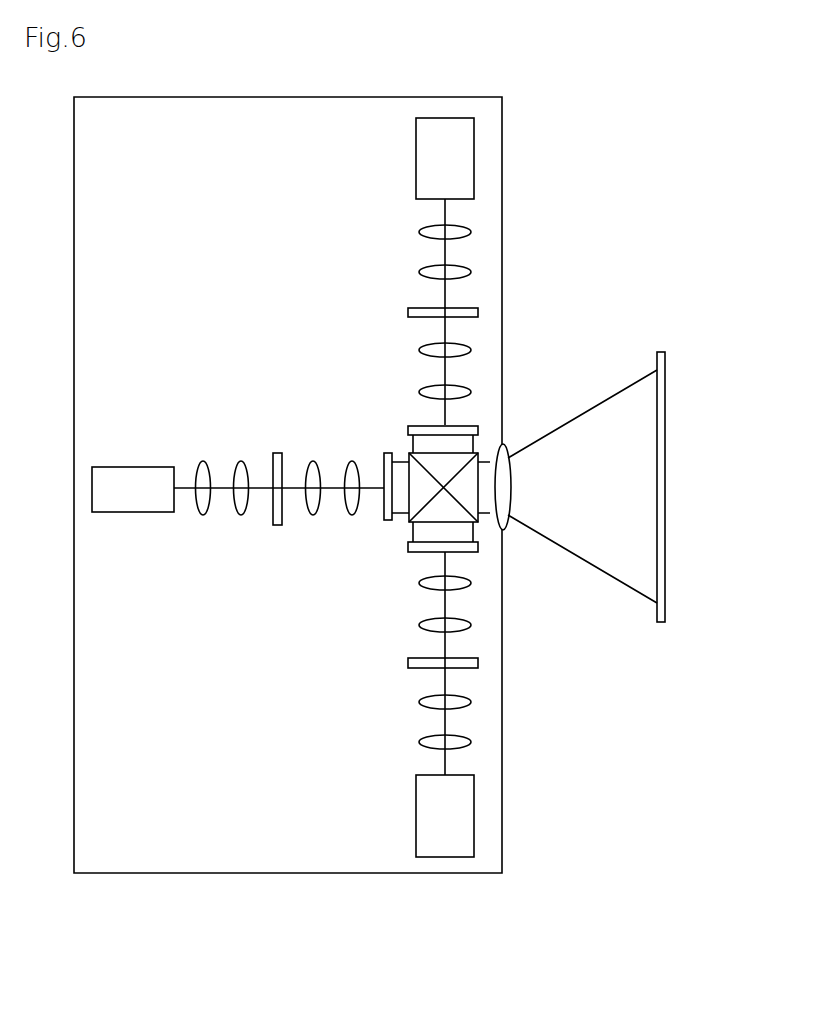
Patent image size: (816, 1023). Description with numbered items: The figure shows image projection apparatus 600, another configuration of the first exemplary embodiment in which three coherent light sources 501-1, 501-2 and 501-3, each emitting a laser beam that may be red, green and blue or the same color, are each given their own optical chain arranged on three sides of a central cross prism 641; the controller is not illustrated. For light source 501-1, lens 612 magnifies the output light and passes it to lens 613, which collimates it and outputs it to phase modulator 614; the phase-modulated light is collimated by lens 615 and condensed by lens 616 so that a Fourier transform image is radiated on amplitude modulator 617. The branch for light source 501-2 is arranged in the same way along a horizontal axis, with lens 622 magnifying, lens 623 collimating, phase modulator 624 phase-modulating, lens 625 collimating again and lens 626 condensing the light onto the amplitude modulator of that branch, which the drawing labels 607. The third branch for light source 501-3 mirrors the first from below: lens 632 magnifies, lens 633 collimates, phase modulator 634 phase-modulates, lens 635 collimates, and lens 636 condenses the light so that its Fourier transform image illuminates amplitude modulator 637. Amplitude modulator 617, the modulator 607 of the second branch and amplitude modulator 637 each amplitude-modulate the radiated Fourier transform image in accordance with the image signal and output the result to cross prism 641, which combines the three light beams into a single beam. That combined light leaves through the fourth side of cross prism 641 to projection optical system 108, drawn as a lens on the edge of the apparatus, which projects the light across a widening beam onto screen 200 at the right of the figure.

The image projection apparatus 600 is at (502, 158).
The light source 501-1 is at (416, 158).
The light source 501-2 is at (148, 447).
The light source 501-3 is at (416, 818).
The lens 612 is at (418, 232).
The lens 613 is at (418, 272).
The phase modulator 614 is at (408, 312).
The lens 615 is at (418, 350).
The lens 616 is at (418, 392).
The amplitude modulator 617 is at (408, 428).
The lens 622 is at (203, 461).
The lens 623 is at (241, 461).
The phase modulator 624 is at (274, 453).
The lens 625 is at (313, 461).
The lens 626 is at (352, 461).
The light valve 607 is at (384, 458).
The cross prism 641 is at (409, 522).
The amplitude modulator 637 is at (408, 548).
The lens 636 is at (418, 583).
The lens 635 is at (418, 625).
The phase modulator 634 is at (408, 664).
The lens 633 is at (418, 702).
The lens 632 is at (418, 742).
The projection optical system 108 is at (497, 448).
The screen 200 is at (661, 352).